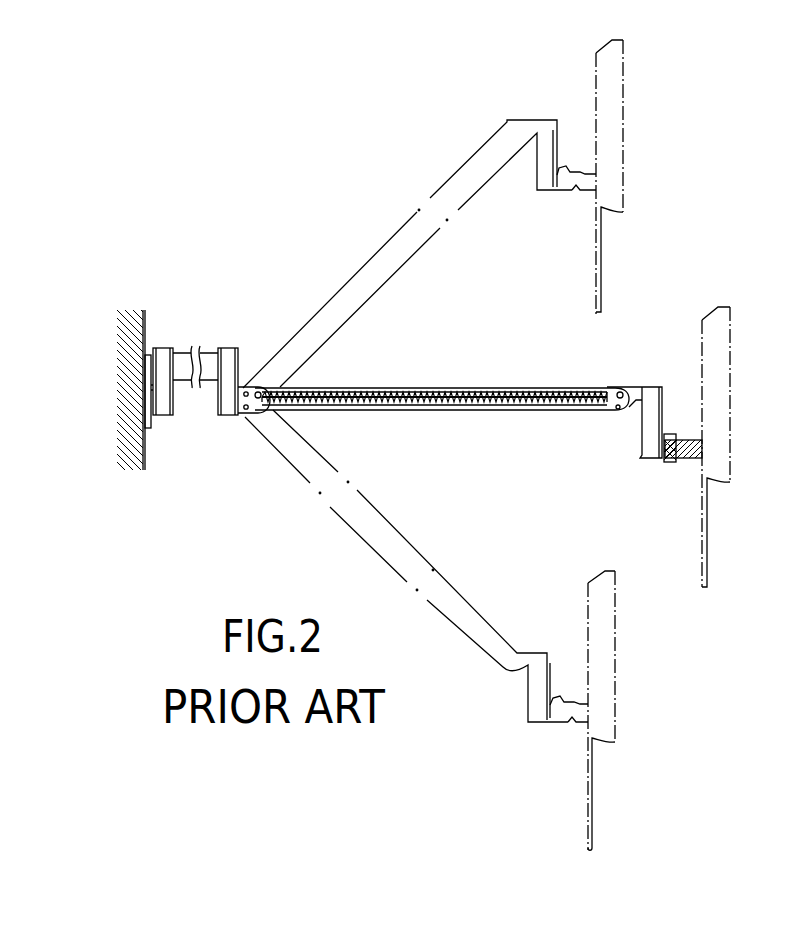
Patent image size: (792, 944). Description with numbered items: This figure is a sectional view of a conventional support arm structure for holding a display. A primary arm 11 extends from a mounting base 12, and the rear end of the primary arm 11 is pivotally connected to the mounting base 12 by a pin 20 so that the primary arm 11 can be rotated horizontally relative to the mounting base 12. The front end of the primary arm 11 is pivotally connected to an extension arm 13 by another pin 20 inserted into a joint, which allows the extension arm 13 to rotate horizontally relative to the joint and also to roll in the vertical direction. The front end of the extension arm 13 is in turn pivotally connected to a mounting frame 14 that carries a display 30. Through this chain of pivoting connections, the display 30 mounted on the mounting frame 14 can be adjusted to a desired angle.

The primary arm 11 is at (205, 350).
The mounting base 12 is at (152, 418).
The extension arm 13 is at (368, 258).
The mounting frame 14 is at (690, 455).
The pin 20 is at (158, 350).
The display 30 is at (623, 125).